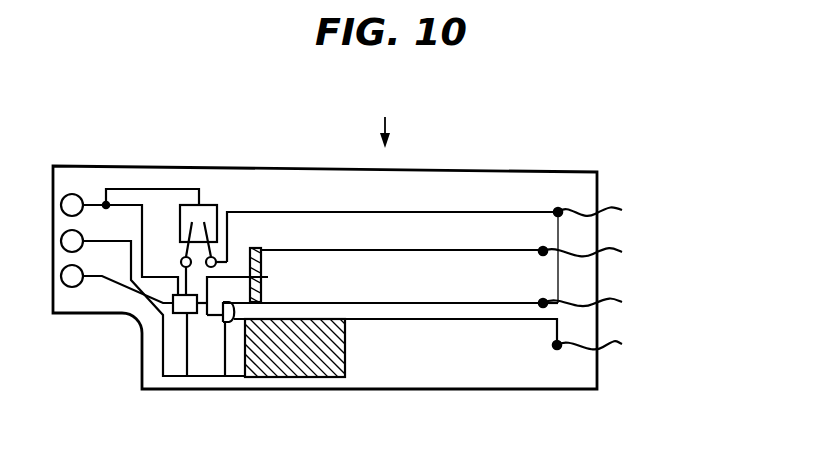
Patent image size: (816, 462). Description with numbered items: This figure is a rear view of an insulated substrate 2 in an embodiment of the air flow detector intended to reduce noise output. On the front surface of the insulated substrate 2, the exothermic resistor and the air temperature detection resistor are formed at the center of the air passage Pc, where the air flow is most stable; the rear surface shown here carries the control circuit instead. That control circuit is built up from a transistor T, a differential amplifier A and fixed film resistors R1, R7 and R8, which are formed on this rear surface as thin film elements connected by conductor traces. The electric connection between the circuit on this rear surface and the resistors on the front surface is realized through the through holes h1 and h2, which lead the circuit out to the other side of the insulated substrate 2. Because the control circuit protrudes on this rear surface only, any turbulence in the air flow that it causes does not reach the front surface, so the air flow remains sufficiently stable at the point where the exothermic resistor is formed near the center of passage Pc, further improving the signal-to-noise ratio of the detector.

The insulated substrate 2 is at (547, 186).
The transistor T is at (210, 210).
The differential amplifier A is at (187, 305).
The fixed film resistor R8 is at (262, 263).
The fixed film resistor R7 is at (268, 301).
The fixed film resistor R1 is at (322, 360).
The through hole h1 is at (603, 231).
The through hole h2 is at (603, 322).
The center of passage Pc is at (400, 130).